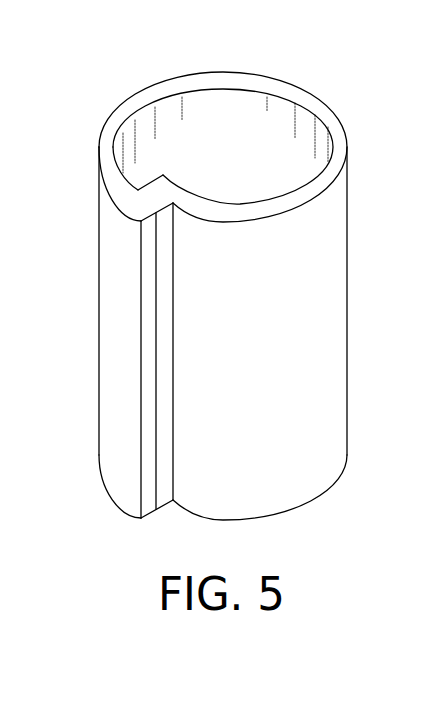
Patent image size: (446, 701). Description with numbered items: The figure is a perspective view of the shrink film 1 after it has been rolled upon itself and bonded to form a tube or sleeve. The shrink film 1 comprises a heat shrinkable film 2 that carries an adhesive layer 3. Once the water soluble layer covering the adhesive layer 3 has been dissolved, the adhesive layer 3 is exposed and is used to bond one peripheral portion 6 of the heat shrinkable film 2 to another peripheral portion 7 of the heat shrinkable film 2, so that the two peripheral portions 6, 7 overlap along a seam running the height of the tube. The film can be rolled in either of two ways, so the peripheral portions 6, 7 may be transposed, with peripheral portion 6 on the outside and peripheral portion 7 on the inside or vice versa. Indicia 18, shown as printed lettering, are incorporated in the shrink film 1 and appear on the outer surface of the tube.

The shrink film 1 is at (83, 112).
The heat shrinkable film 2 is at (110, 275).
The adhesive layer 3 is at (167, 473).
The peripheral portion 6 is at (178, 184).
The peripheral portion 7 is at (140, 221).
The indicia 18 is at (319, 348).